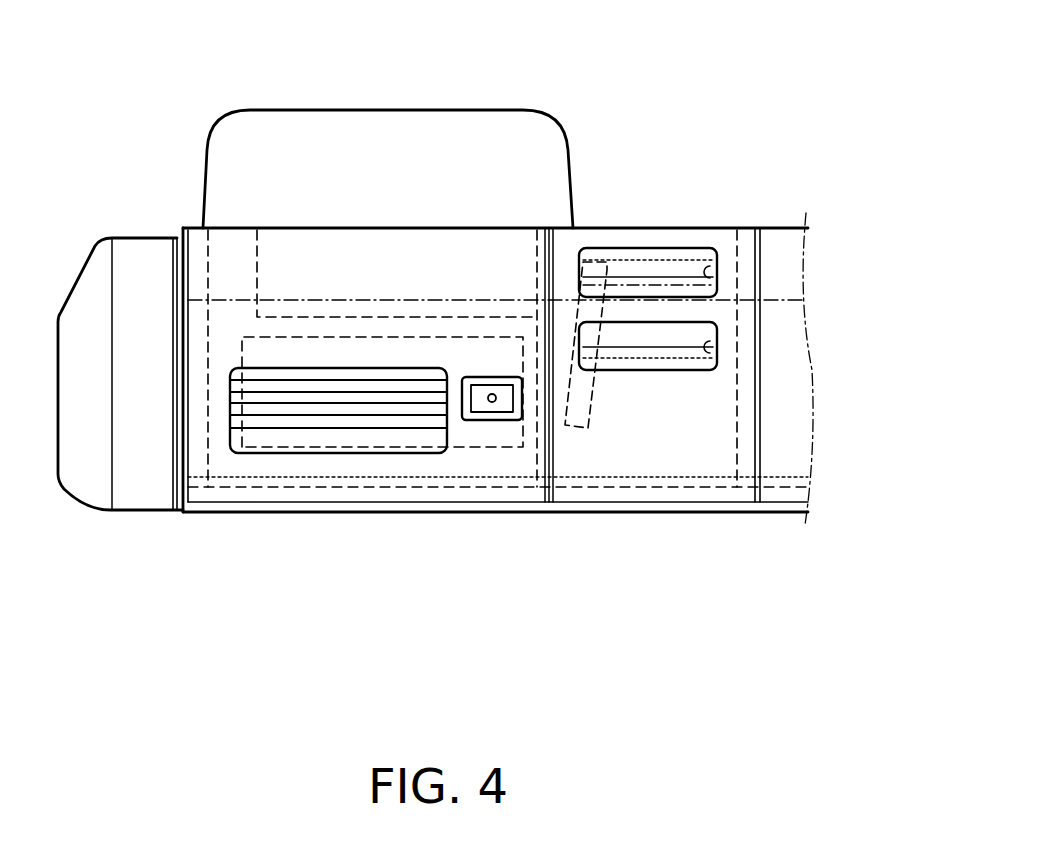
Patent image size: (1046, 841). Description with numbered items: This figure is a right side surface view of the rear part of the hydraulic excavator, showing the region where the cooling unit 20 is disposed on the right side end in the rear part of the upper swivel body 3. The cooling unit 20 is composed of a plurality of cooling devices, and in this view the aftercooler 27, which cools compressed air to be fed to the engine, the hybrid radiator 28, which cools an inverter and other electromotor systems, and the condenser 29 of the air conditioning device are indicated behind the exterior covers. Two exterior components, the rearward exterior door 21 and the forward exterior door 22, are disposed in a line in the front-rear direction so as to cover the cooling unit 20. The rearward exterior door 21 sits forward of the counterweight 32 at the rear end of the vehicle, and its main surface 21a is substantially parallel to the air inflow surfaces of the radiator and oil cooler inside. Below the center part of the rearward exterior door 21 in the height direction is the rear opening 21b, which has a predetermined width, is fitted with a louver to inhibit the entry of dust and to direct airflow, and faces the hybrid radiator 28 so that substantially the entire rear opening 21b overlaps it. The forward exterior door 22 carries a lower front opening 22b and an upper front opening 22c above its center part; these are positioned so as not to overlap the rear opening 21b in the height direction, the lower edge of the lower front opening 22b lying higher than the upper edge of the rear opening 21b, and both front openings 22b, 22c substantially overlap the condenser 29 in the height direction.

The upper swivel body 3 is at (721, 512).
The cooling unit 20 is at (238, 249).
The rearward exterior door 21 is at (229, 274).
The main surface 21a is at (383, 257).
The rear opening 21b is at (307, 447).
The forward exterior door 22 is at (702, 239).
The lower front opening 22b is at (717, 350).
The upper front opening 22c is at (717, 276).
The aftercooler 27 is at (500, 257).
The hybrid radiator 28 is at (490, 437).
The condenser 29 is at (596, 258).
The counterweight 32 is at (92, 480).